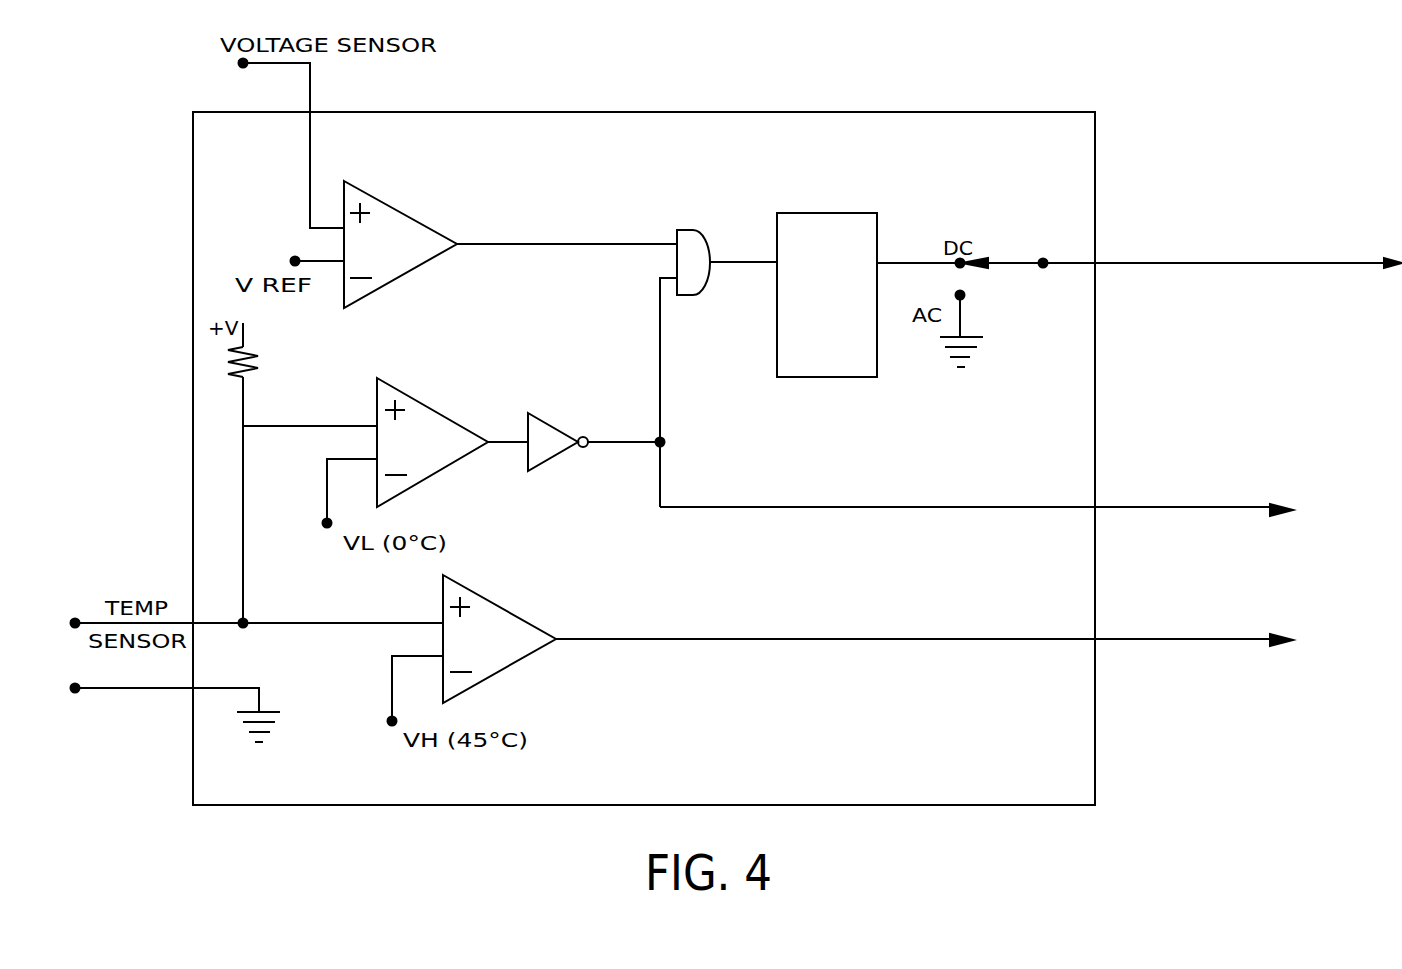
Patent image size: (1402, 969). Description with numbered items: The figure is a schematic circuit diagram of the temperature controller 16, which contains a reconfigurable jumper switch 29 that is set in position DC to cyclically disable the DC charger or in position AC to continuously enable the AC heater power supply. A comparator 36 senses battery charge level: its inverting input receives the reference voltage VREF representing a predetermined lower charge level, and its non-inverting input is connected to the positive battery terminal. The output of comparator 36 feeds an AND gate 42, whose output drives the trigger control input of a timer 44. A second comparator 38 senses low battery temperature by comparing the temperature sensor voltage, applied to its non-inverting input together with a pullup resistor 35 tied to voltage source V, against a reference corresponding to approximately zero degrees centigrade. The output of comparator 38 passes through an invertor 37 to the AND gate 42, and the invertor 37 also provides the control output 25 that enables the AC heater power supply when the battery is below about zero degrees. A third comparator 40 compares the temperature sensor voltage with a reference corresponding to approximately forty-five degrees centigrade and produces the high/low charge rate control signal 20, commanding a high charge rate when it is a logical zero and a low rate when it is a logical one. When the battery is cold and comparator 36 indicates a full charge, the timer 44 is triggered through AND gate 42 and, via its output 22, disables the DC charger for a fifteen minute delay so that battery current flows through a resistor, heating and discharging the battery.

The temperature controller 16 is at (743, 112).
The comparator 36 is at (386, 200).
The AND gate 42 is at (690, 230).
The timer 44 is at (848, 213).
The reconfigurable jumper switch 29 is at (1015, 262).
The output 22 is at (1112, 265).
The pullup resistor 35 is at (255, 380).
The comparator 38 is at (420, 400).
The invertor 37 is at (543, 421).
The control output 25 is at (1185, 510).
The comparator 40 is at (487, 600).
The high/low charge rate control signal 20 is at (1185, 640).